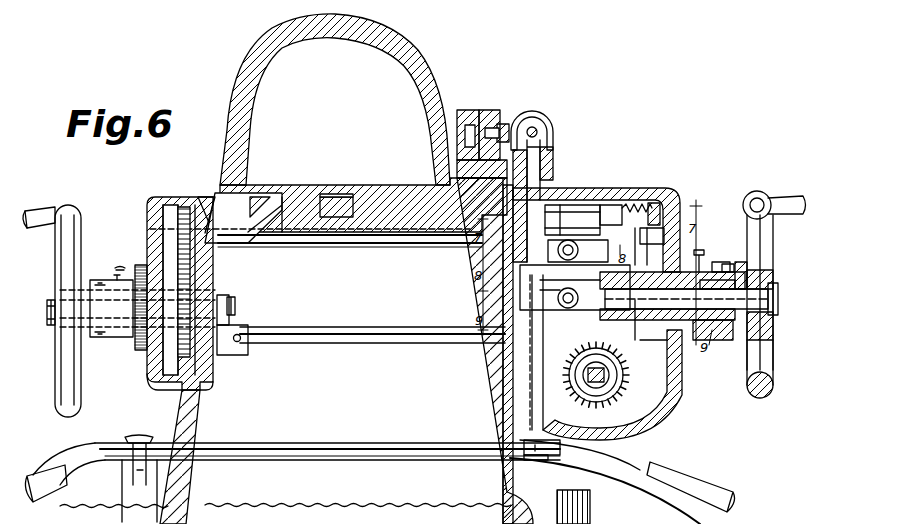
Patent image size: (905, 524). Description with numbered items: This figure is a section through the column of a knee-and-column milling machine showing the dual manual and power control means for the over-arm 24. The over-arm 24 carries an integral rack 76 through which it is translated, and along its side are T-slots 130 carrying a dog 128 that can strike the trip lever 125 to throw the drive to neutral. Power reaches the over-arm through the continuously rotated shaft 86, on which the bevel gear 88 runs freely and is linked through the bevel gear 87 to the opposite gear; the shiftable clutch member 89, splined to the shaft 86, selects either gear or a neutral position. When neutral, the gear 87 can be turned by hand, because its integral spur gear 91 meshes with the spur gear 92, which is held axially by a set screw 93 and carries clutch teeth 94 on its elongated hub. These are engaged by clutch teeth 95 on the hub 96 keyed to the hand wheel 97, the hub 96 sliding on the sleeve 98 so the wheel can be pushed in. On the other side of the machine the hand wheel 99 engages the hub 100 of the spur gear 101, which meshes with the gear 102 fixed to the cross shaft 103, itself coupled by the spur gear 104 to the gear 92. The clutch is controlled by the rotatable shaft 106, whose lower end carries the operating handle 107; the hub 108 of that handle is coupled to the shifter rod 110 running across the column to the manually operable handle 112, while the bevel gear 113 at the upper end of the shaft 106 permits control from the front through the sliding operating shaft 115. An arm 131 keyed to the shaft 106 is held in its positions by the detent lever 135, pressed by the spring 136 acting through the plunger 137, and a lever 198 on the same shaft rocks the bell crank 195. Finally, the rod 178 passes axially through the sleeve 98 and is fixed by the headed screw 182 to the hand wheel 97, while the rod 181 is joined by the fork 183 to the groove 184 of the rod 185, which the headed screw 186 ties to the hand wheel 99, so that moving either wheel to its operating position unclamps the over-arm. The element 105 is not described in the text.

The over-arm 24 is at (420, 68).
The rack 76 is at (335, 196).
The shaft 103 is at (354, 246).
The gear 102 is at (184, 206).
The spur gear 101 is at (147, 262).
The hand wheel 99 is at (70, 215).
The hub 100 is at (112, 338).
The headed screw 186 is at (50, 325).
The rod 181 is at (345, 344).
The fork 183 is at (240, 322).
The groove 184 is at (226, 297).
The rod 185 is at (236, 304).
The shifter rod 110 is at (350, 461).
The manually operable handle 112 is at (45, 480).
The T-slots 130 is at (470, 110).
The dog 128 is at (490, 110).
The bevel gear 113 is at (553, 132).
The operating shaft 115 is at (538, 128).
The trip lever 125 is at (554, 165).
The arm 131 is at (560, 205).
The bevel gear 87 is at (650, 432).
The spur gear 91 is at (668, 413).
The shiftable clutch member 89 is at (637, 443).
The bevel gear 88 is at (632, 460).
The operating handle 107 is at (640, 468).
The shaft 86 is at (568, 377).
The rod 105 is at (513, 375).
The rotatable shaft 106 is at (536, 425).
The hub 108 is at (548, 462).
The lever 198 is at (535, 283).
The bell crank 195 is at (588, 240).
The detent lever 135 is at (608, 204).
The plunger 137 is at (640, 205).
The spring 136 is at (655, 203).
The spur gear 104 is at (672, 230).
The rod 178 is at (715, 342).
The headed screw 182 is at (779, 300).
The clutch teeth 95 is at (722, 340).
The hub 96 is at (740, 262).
The spur gear 92 is at (720, 272).
The sleeve 98 is at (700, 253).
The set screw 93 is at (720, 262).
The clutch teeth 94 is at (732, 260).
The hand wheel 97 is at (758, 198).